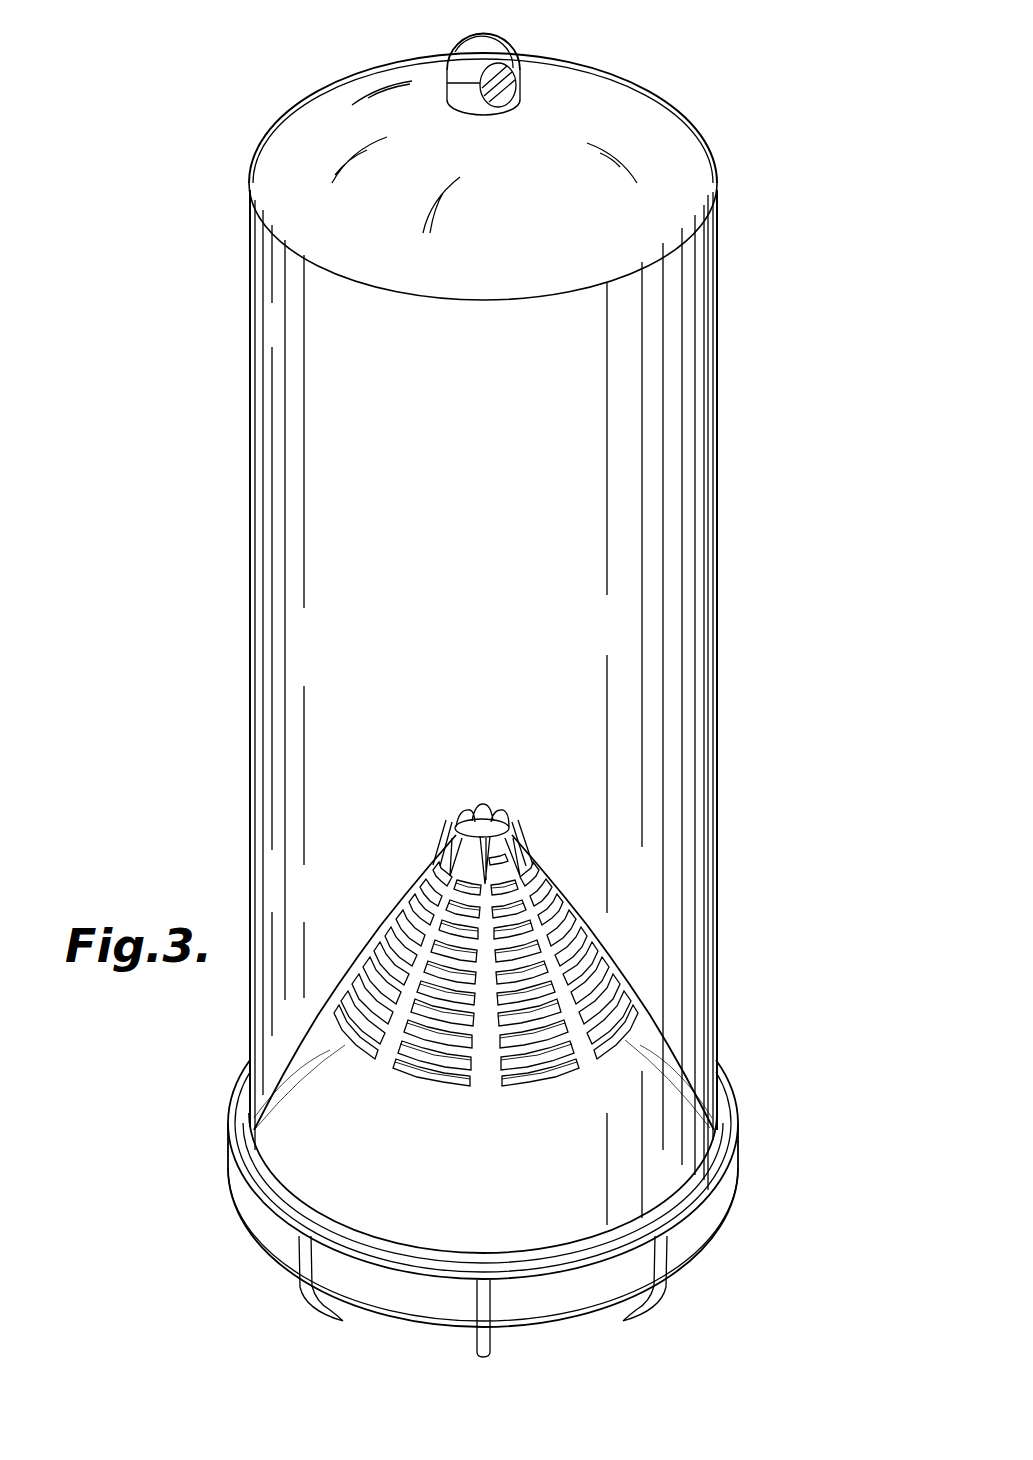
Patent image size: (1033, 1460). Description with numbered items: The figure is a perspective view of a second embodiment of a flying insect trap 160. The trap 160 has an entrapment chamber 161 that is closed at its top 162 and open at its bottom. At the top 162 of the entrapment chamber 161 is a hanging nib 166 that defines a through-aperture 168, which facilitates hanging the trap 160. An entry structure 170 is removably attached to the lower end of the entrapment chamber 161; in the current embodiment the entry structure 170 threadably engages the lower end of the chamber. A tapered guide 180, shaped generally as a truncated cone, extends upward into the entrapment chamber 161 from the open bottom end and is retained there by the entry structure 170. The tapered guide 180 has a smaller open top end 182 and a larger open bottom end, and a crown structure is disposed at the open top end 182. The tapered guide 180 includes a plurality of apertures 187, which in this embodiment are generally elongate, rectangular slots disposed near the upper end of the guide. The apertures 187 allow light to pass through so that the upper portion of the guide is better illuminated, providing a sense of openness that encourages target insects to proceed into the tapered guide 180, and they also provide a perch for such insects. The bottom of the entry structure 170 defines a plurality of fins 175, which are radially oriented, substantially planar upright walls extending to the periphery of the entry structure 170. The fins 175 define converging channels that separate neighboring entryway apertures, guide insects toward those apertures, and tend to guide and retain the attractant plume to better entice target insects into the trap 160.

The insect trap 160 is at (212, 128).
The entrapment chamber 161 is at (702, 490).
The top 162 is at (324, 108).
The hanging nib 166 is at (463, 43).
The through-aperture 168 is at (516, 78).
The entry structure 170 is at (705, 1222).
The fins 175 is at (337, 1306).
The tapered guide 180 is at (637, 1037).
The open top end 182 is at (483, 823).
The apertures 187 is at (410, 907).